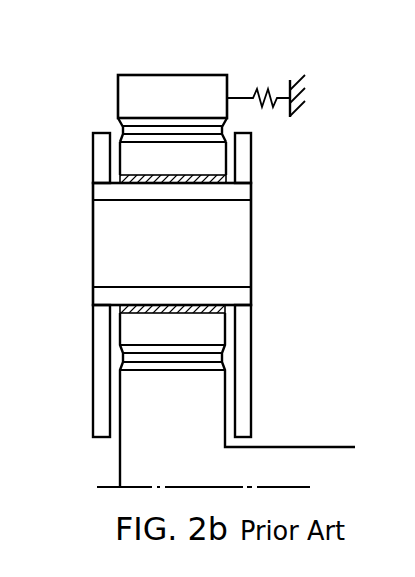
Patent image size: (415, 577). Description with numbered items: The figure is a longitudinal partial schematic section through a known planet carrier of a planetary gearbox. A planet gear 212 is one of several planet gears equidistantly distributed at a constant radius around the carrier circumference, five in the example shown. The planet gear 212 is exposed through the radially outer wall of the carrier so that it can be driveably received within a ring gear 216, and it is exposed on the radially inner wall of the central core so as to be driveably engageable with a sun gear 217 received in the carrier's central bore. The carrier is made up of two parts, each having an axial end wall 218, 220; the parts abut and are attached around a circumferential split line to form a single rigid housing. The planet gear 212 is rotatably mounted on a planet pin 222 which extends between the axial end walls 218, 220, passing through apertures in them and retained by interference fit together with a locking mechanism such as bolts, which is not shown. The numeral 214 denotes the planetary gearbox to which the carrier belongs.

The ring gear 216 is at (173, 98).
The planet gear 212 is at (210, 155).
The planet pin 222 is at (233, 295).
The right guide tube 214 is at (245, 345).
The axial end wall 220 is at (245, 400).
The axial end wall 218 is at (100, 353).
The sun gear 217 is at (150, 397).